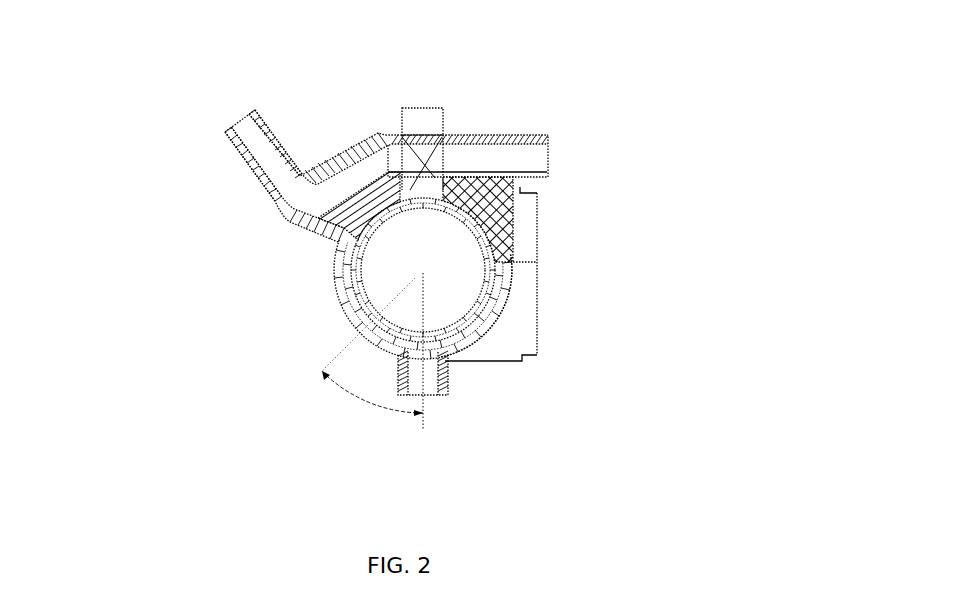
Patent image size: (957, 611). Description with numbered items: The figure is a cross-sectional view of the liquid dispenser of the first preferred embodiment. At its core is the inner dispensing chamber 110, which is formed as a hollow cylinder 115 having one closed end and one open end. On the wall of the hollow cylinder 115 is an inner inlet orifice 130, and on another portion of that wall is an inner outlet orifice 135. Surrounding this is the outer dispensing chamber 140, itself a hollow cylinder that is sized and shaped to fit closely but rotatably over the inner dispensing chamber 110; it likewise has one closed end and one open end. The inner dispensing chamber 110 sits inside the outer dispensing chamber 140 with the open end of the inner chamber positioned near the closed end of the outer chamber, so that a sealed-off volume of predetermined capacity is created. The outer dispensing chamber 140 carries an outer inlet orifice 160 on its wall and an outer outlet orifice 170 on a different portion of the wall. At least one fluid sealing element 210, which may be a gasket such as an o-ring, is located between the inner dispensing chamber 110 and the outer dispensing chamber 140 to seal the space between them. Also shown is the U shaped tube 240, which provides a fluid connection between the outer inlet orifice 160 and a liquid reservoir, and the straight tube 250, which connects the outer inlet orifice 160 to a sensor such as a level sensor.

The inner dispensing chamber 110 is at (490, 272).
The hollow cylinder 115 is at (385, 262).
The inner inlet orifice 130 is at (300, 216).
The inner outlet orifice 135 is at (350, 313).
The outer dispensing chamber 140 is at (352, 330).
The outer inlet orifice 160 is at (422, 195).
The outer outlet orifice 170 is at (427, 387).
The fluid sealing element 210 is at (487, 308).
The U shaped tube 240 is at (240, 109).
The straight tube 250 is at (527, 155).